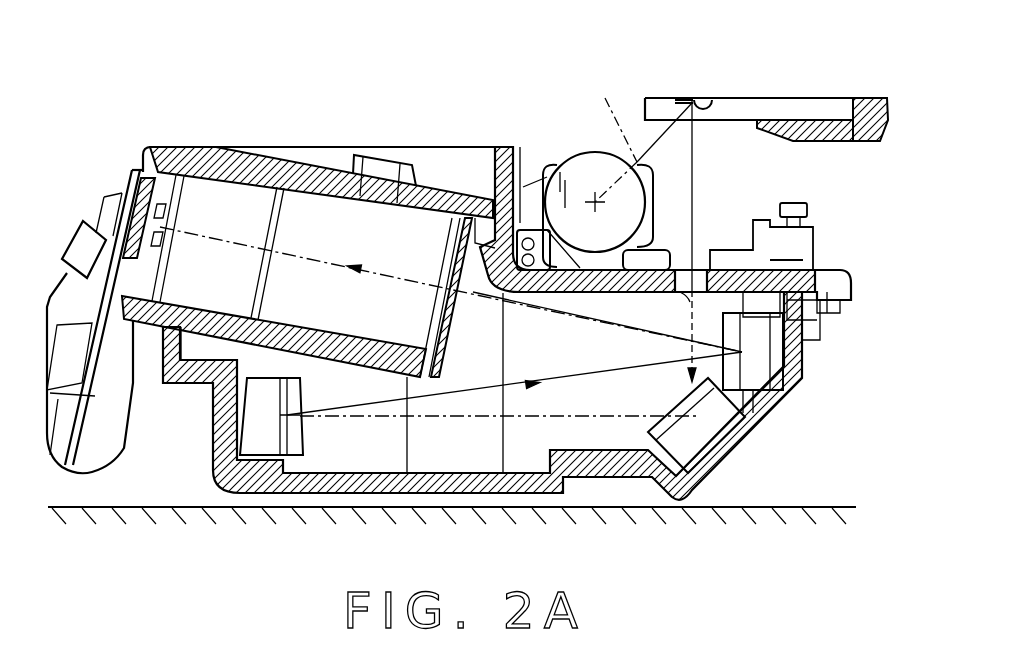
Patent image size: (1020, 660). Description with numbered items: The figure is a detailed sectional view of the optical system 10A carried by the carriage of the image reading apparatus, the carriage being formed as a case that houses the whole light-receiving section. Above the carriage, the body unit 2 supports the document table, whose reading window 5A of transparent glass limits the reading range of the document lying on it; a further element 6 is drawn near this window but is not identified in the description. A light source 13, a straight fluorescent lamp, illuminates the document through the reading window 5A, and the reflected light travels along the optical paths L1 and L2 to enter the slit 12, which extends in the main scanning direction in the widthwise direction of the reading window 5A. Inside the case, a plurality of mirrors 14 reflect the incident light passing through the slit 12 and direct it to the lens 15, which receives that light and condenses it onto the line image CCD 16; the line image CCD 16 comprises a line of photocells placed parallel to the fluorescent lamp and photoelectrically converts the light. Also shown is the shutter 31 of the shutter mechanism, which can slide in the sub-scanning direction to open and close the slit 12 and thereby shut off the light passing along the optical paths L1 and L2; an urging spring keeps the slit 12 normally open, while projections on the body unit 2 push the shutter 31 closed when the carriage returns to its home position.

The optical unit 10A is at (566, 95).
The body unit 2 is at (860, 103).
The reading window 5A is at (770, 103).
The opening 6 is at (710, 98).
The slit 12 is at (688, 289).
The light source 13 is at (566, 158).
The mirrors 14 is at (300, 443).
The lens 15 is at (313, 210).
The line image CCD 16 is at (157, 227).
The shutter 31 is at (723, 252).
The optical path L1 is at (639, 138).
The optical path L2 is at (692, 187).